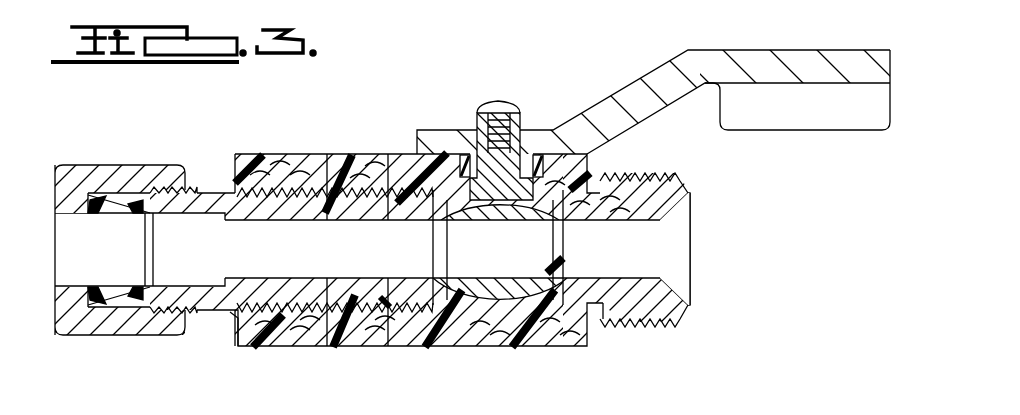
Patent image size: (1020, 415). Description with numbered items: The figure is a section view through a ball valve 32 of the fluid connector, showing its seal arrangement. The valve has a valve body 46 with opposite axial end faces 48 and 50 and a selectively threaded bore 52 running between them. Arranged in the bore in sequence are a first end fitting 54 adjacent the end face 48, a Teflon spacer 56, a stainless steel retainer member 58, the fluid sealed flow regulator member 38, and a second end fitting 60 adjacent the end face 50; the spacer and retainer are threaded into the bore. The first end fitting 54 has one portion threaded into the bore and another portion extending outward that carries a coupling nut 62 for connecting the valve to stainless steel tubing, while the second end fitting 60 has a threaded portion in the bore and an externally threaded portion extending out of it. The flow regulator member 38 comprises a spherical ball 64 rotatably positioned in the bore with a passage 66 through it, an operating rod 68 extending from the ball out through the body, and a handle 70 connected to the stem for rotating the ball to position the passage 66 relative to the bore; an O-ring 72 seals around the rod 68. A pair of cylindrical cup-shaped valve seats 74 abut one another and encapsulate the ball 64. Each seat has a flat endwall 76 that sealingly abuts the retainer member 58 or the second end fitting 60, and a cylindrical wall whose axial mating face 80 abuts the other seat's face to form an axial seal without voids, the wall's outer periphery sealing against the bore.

The ball valve 32 is at (716, 251).
The fluid sealed flow regulator member 38 is at (783, 44).
The valve body 46 is at (399, 135).
The axial end face 48 is at (230, 340).
The axial end face 50 is at (563, 337).
The selectively threaded bore 52 is at (450, 295).
The first end fitting 54 is at (206, 329).
The Teflon spacer 56 is at (328, 170).
The stainless steel retainer member 58 is at (388, 170).
The second end fitting 60 is at (655, 312).
The coupling nut 62 is at (84, 336).
The spherical ball 64 is at (520, 300).
The passage 66 is at (498, 222).
The operating rod 68 is at (477, 140).
The handle 70 is at (630, 95).
The O-ring 72 is at (466, 152).
The cylindrical cup-shaped valve seat 74 is at (443, 280).
The flat endwall 76 is at (430, 297).
The axial mating face 80 is at (490, 297).